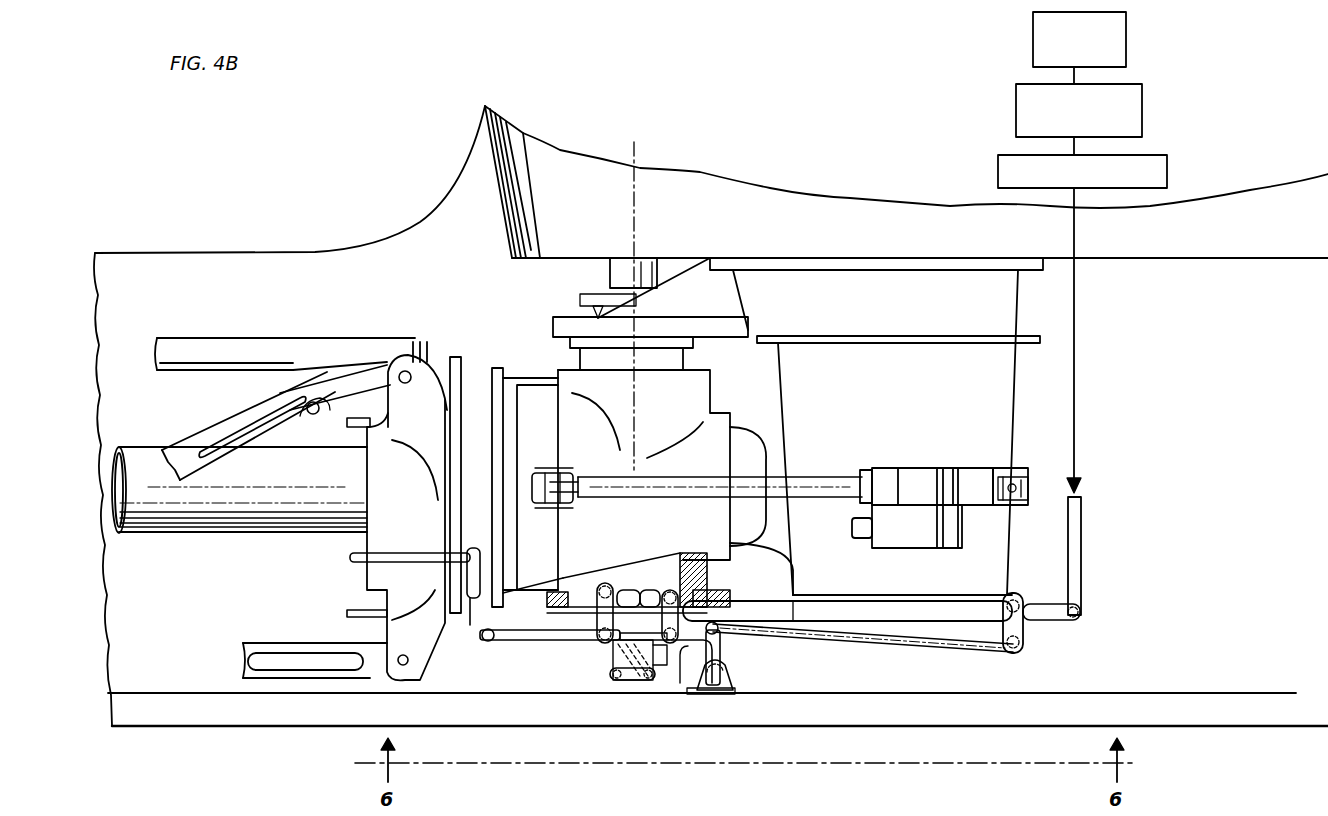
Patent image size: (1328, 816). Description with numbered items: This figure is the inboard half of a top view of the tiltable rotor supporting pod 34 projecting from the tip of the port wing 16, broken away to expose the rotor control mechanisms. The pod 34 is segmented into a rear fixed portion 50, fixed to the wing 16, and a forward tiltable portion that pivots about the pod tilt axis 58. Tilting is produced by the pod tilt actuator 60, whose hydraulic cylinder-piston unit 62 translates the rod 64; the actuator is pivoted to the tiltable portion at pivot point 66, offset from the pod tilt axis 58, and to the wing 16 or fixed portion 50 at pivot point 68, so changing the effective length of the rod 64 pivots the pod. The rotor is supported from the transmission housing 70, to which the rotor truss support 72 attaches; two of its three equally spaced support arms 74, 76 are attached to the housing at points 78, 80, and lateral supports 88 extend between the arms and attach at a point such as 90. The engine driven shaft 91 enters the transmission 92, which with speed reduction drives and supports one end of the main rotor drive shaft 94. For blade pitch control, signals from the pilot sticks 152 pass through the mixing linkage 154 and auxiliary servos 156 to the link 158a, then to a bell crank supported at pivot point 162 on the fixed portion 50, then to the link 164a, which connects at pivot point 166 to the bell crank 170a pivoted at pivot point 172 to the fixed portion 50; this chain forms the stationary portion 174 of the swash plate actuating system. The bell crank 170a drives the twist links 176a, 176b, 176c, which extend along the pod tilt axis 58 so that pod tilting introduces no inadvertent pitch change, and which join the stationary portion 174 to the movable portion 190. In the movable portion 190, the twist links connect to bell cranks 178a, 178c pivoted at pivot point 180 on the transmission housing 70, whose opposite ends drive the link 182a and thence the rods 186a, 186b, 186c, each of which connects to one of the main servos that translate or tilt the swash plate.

The pod 34 is at (128, 270).
The wing 16 is at (487, 118).
The pod tilt axis 58 is at (637, 164).
The engine driven shaft 91 is at (612, 282).
The support arm 74 is at (280, 340).
The rotor truss support 72 is at (332, 339).
The attachment point 78 is at (410, 353).
The transmission housing 70 is at (473, 376).
The transmission 92 is at (710, 420).
The pivot point 66 is at (552, 486).
The rod 64 is at (836, 480).
The pod tilt actuator 60 is at (886, 470).
The hydraulic cylinder-piston unit 62 is at (968, 470).
The pivot point 68 is at (1013, 503).
The lateral support 88 is at (224, 432).
The attachment point 90 is at (325, 410).
The main rotor drive shaft 94 is at (141, 455).
The rod 186c is at (357, 428).
The rod 186b is at (352, 556).
The rod 186a is at (352, 610).
The support arm 76 is at (290, 645).
The attachment point 80 is at (410, 660).
The movable portion 190 is at (490, 645).
The link 182a is at (517, 642).
The bell crank 178a is at (597, 622).
The pivot point 180 is at (604, 598).
The bell crank 178c is at (657, 580).
The twist link 176b is at (625, 658).
The twist link 176c is at (681, 653).
The twist link 176a is at (636, 681).
The bell crank 170a is at (683, 678).
The pivot point 166 is at (719, 649).
The pivot point 172 is at (719, 675).
The link 164a is at (878, 648).
The stationary portion 174 is at (948, 651).
The pivot point 162 is at (1018, 637).
The link 158a is at (1082, 548).
The pilot sticks 152 is at (1128, 32).
The mixing linkage 154 is at (1144, 104).
The auxiliary servos 156 is at (1170, 170).
The rear fixed portion 50 is at (1300, 680).